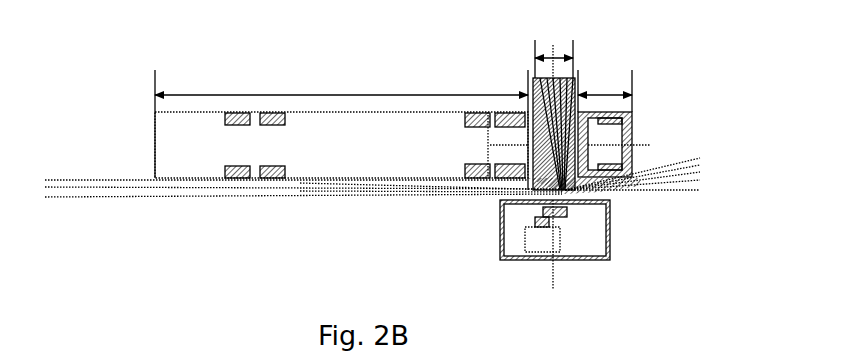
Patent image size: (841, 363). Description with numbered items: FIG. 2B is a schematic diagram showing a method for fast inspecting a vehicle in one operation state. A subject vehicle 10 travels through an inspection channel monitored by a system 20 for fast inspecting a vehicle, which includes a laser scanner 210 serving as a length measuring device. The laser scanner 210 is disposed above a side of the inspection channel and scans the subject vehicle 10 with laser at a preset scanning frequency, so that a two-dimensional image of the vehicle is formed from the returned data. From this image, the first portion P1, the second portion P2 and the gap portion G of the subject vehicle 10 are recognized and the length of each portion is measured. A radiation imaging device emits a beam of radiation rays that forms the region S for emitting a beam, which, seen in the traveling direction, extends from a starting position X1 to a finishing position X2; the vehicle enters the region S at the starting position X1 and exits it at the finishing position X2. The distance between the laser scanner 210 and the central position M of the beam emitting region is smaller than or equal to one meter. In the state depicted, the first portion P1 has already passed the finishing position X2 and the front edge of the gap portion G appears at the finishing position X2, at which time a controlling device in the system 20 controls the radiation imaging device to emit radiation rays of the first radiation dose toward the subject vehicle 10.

The subject vehicle 10 is at (323, 160).
The system for fast inspecting a vehicle 20 is at (585, 243).
The laser scanner 210 is at (565, 212).
The gap portion G is at (552, 82).
The region for emitting a beam S is at (553, 78).
The central position of the beam emitting region M is at (551, 53).
The starting position X1 is at (526, 58).
The finishing position X2 is at (559, 58).
The first portion P1 is at (605, 91).
The second portion P2 is at (341, 130).